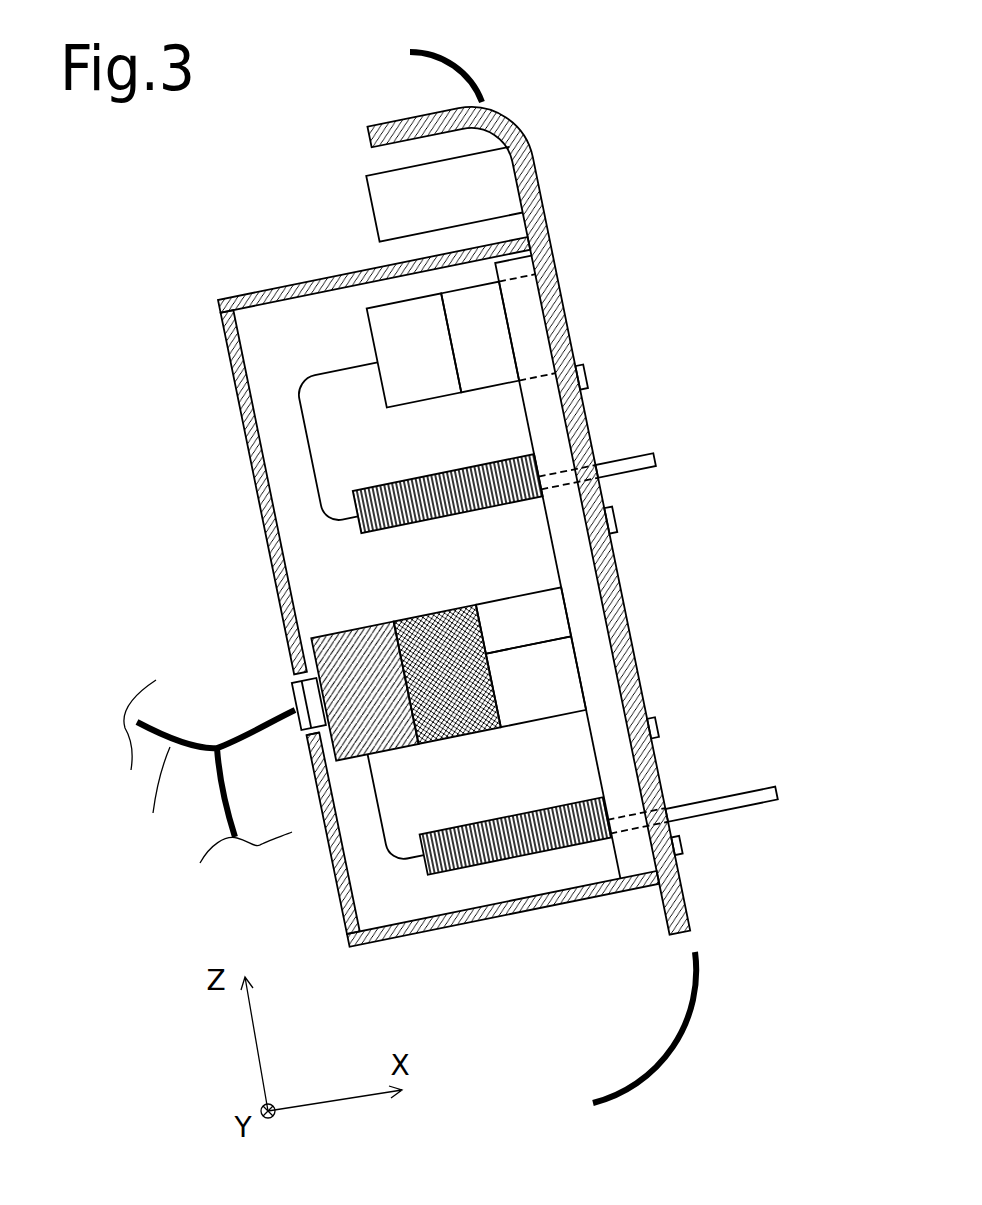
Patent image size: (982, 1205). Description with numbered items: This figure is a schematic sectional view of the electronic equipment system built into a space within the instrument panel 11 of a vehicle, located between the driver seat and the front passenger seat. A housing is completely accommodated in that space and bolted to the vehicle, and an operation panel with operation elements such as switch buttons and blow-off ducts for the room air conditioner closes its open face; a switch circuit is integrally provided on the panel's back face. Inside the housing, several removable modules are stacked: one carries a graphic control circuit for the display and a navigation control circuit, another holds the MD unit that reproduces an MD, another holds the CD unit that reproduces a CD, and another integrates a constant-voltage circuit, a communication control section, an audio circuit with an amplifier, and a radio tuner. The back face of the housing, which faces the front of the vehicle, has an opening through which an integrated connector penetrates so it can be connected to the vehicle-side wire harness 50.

The instrument panel 11 is at (472, 75).
The vehicle-side wire harness 50 is at (209, 771).